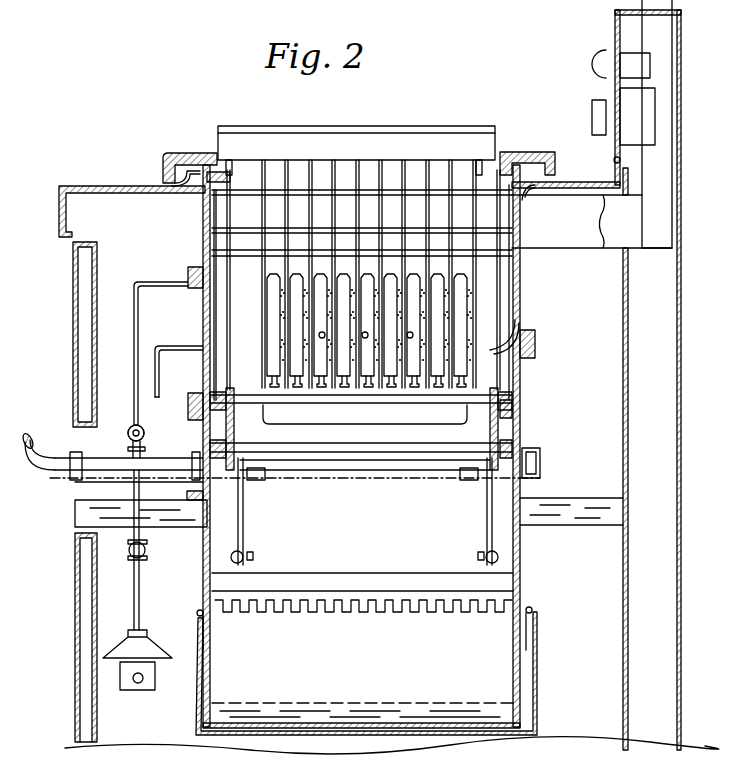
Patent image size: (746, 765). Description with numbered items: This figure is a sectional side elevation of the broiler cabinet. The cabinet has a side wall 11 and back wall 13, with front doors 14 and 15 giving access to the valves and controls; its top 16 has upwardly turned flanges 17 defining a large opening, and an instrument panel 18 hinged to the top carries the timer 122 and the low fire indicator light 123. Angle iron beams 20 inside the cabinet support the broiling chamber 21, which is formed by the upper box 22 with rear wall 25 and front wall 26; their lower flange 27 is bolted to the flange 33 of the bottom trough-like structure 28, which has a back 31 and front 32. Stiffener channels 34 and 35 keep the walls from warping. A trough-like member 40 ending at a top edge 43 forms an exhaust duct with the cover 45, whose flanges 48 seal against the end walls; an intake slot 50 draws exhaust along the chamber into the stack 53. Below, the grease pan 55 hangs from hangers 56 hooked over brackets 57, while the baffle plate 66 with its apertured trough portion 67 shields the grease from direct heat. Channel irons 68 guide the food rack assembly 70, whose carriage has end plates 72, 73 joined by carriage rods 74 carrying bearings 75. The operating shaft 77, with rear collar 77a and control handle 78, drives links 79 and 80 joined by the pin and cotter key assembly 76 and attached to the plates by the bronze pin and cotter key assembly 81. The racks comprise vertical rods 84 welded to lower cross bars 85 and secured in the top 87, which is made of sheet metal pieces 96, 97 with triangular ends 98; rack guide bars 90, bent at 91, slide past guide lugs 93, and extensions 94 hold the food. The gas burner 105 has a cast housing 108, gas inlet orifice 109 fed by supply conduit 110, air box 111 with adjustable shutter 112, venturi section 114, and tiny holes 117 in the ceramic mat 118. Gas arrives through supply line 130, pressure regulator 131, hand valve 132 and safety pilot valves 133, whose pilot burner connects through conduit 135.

The side wall 11 is at (600, 367).
The back wall 13 is at (628, 410).
The front door 14 is at (73, 330).
The front door 15 is at (75, 628).
The top 16 is at (100, 186).
The upwardly turned flange 17 is at (178, 184).
The instrument panel 18 is at (614, 30).
The angle iron beam 20 is at (588, 498).
The broiling chamber 21 is at (500, 268).
The upper box 22 is at (521, 285).
The rear wall 25 is at (519, 298).
The front wall 26 is at (203, 318).
The outwardly extending flange 27 is at (187, 494).
The bottom trough-like structure 28 is at (205, 600).
The back 31 is at (521, 568).
The front 32 is at (205, 570).
The flange 33 is at (190, 527).
The horizontal stiffener channel 34 is at (188, 276).
The stiffener channel 35 is at (536, 340).
The trough-like member 40 is at (478, 205).
The top edge 43 is at (250, 196).
The cover 45 is at (170, 153).
The downwardly extending flange 48 is at (210, 182).
The intake slot 50 is at (408, 196).
The stack 53 is at (672, 175).
The grease pan 55 is at (196, 736).
The hanger 56 is at (197, 678).
The bracket 57 is at (197, 622).
The baffle plate 66 is at (327, 573).
The trough portion 67 is at (266, 612).
The channel iron 68 is at (213, 243).
The food rack assembly 70 is at (200, 346).
The end plate 72 is at (234, 430).
The end plate 73 is at (490, 430).
The carriage rod 74 is at (328, 447).
The bearing 75 is at (210, 447).
The pin and cotter key assembly 76 is at (253, 555).
The carriage operating shaft 77 is at (105, 468).
The rear collar 77a is at (540, 452).
The control handle 78 is at (38, 437).
The link 79 is at (244, 539).
The link 80 is at (244, 526).
The bronze pin and cotter key assembly 81 is at (230, 470).
The vertical rod 84 is at (358, 165).
The lower cross bar 85 is at (346, 400).
The top 87 is at (330, 126).
The rack guide bar 90 is at (200, 350).
The bend 91 is at (203, 362).
The guide lug 93 is at (230, 162).
The extension 94 is at (390, 400).
The formed sheet metal piece 96 is at (418, 128).
The inner piece 97 is at (433, 150).
The triangular shaped end 98 is at (218, 140).
The high-intensity radiation gas burner 105 is at (278, 300).
The cast housing 108 is at (278, 759).
The gas inlet orifice 109 is at (161, 759).
The supply conduit 110 is at (159, 385).
The air box 111 is at (129, 757).
The adjustable shutter 112 is at (93, 759).
The venturi section 114 is at (325, 759).
The tiny holes 117 is at (290, 331).
The ceramic mat 118 is at (283, 340).
The timer 122 is at (592, 108).
The low fire indicator light 123 is at (597, 66).
The gas supply line 130 is at (131, 428).
The pressure regulator 131 is at (133, 690).
The hand valve 132 is at (130, 560).
The automatic safety pilot valve 133 is at (145, 433).
The conduit 135 is at (134, 305).